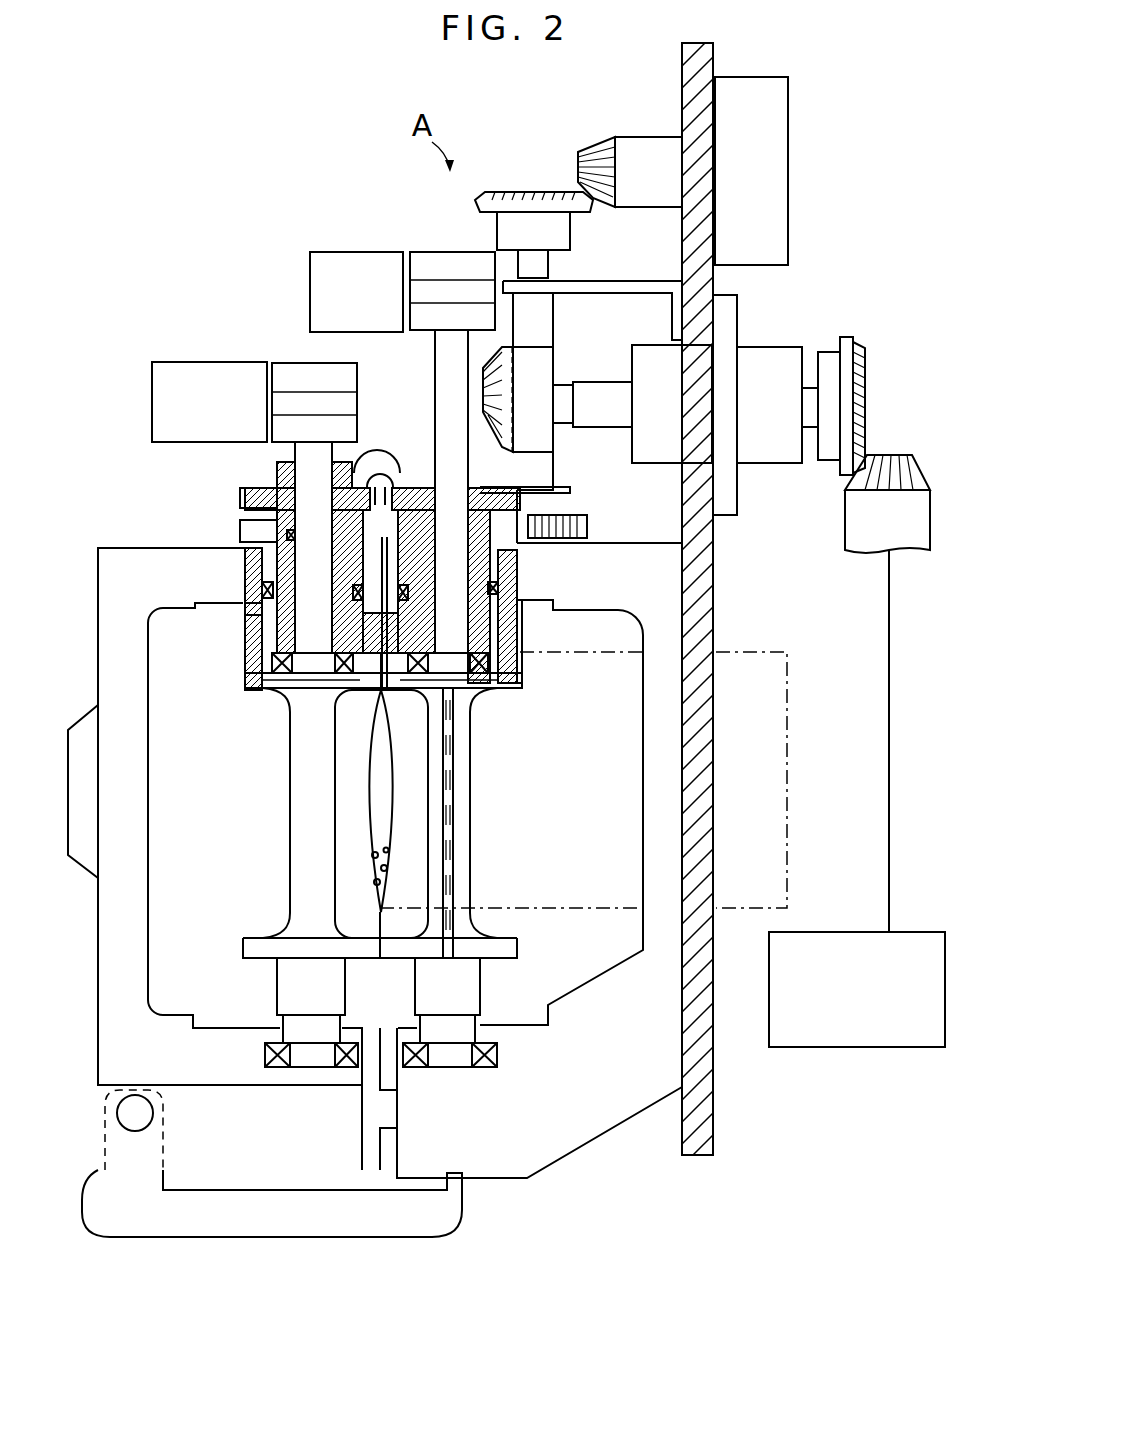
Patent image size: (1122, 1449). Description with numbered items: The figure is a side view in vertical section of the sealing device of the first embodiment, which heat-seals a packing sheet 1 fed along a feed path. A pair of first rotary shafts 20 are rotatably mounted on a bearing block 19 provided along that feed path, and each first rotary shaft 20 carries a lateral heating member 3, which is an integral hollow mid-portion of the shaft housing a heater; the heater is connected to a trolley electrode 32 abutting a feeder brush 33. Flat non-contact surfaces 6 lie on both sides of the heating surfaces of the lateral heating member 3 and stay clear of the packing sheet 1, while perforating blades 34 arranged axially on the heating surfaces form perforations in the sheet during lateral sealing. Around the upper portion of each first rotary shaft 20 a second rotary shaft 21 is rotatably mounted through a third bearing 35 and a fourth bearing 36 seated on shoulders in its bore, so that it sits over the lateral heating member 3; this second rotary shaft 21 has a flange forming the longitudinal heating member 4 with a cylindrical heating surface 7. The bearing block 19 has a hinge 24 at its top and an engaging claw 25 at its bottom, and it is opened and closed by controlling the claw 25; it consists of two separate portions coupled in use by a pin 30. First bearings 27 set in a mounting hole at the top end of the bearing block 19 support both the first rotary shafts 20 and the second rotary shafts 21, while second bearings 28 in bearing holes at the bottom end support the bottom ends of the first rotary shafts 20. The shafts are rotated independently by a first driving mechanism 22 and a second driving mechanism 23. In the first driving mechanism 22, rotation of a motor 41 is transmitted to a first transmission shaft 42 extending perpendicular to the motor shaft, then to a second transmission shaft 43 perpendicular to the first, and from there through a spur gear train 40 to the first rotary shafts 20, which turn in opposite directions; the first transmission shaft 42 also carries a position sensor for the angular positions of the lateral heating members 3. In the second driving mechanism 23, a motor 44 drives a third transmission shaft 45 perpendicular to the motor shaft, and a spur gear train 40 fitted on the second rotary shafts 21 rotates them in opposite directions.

The packing sheet 1 is at (591, 843).
The lateral heating member 3 is at (305, 813).
The longitudinal heating member 4 is at (262, 668).
The non-contact surface 6 is at (470, 823).
The cylindrical heating surface 7 is at (267, 693).
The bearing block 19 is at (145, 556).
The first rotary shaft 20 is at (443, 375).
The second rotary shaft 21 is at (535, 655).
The first driving mechanism 22 is at (589, 370).
The second driving mechanism 23 is at (565, 146).
The hinge 24 is at (380, 475).
The engaging claw 25 is at (365, 1218).
The first bearing 27 is at (243, 598).
The second bearing 28 is at (277, 1043).
The pin 30 is at (390, 1108).
The trolley electrode 32 is at (287, 382).
The feeder brush 33 is at (190, 392).
The perforating blade 34 is at (450, 797).
The third bearing 35 is at (530, 527).
The fourth bearing 36 is at (318, 680).
The spur gear train 40 is at (240, 505).
The motor 41 is at (853, 1050).
The first transmission shaft 42 is at (889, 590).
The second transmission shaft 43 is at (785, 346).
The motor 44 is at (778, 180).
The third transmission shaft 45 is at (522, 192).